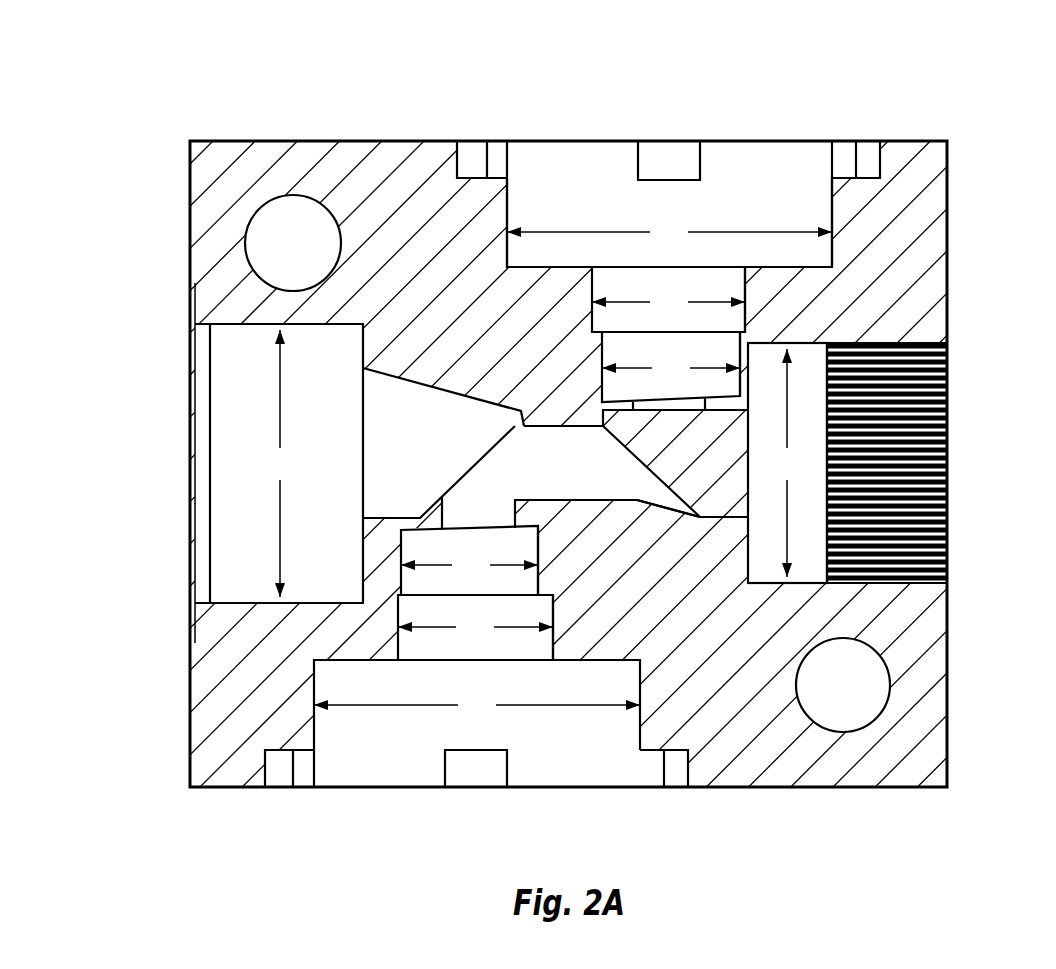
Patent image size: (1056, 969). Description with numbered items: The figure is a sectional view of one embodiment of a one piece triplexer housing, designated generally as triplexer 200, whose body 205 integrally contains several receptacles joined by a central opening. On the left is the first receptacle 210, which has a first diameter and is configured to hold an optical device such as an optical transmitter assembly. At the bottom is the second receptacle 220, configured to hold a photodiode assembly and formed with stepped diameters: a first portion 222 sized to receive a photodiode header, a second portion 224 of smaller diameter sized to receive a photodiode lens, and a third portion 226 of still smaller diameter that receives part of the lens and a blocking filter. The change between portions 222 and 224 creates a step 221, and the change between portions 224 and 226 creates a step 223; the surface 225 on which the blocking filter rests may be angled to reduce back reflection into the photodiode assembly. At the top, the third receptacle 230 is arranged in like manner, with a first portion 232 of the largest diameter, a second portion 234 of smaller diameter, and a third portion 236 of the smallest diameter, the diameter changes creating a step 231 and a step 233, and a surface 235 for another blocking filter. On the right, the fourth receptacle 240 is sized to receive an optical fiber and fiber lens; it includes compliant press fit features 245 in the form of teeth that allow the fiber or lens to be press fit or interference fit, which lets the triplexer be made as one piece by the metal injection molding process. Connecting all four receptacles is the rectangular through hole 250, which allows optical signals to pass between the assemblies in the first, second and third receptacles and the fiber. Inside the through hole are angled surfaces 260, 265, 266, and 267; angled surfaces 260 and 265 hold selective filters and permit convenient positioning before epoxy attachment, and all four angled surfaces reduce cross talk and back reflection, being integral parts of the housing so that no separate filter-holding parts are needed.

The triplexer housing 200 is at (890, 73).
The body 205 is at (266, 162).
The first receptacle 210 is at (177, 527).
The second receptacle 220 is at (577, 777).
The step 221 is at (555, 657).
The first portion 222 is at (600, 788).
The step 223 is at (540, 593).
The second portion 224 is at (400, 605).
The surface 225 is at (540, 527).
The third portion 226 is at (400, 548).
The third receptacle 230 is at (793, 160).
The step 231 is at (502, 270).
The first portion 232 is at (832, 250).
The step 233 is at (590, 330).
The second portion 234 is at (747, 322).
The surface 235 is at (602, 398).
The third portion 236 is at (748, 343).
The fourth receptacle 240 is at (948, 370).
The compliant press fit features 245 is at (898, 438).
The rectangular through hole 250 is at (589, 473).
The angled surface 260 is at (660, 470).
The angled surface 265 is at (463, 473).
The angled surface 266 is at (660, 507).
The angled surface 267 is at (395, 372).